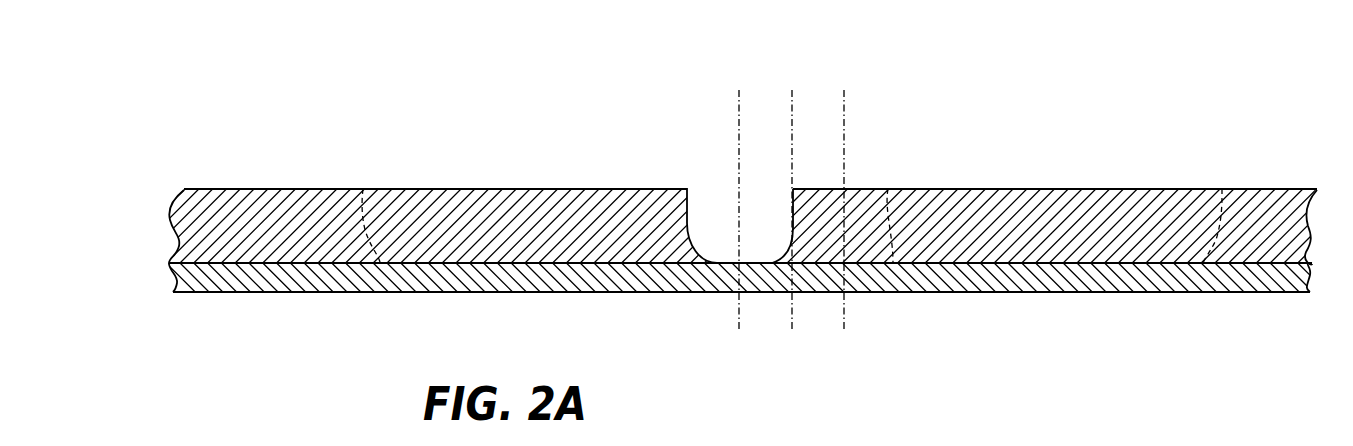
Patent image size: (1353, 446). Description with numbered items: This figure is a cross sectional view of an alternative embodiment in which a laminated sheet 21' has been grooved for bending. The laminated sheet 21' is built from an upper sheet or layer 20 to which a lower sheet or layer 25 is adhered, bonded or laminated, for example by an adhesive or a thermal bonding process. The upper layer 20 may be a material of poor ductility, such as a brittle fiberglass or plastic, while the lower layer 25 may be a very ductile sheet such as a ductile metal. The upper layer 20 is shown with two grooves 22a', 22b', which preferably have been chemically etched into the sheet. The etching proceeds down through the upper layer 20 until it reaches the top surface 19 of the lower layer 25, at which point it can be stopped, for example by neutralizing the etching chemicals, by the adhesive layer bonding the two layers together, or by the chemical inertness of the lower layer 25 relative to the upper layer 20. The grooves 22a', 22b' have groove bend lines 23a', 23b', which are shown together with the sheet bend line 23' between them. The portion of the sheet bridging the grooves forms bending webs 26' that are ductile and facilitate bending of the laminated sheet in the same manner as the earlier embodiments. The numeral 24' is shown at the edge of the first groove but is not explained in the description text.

The top surface of sheet 19 is at (713, 258).
The upper sheet or layer 20 is at (725, 184).
The laminated sheet 21' is at (725, 240).
The groove 22a' is at (444, 181).
The groove 22b' is at (1022, 197).
The groove bend line 23a' is at (693, 196).
The sheet bend line 23' is at (755, 188).
The groove bend line 23b' is at (889, 188).
The rounded edge 24' is at (675, 196).
The lower sheet or layer 25 is at (746, 322).
The bending web 26' is at (781, 336).